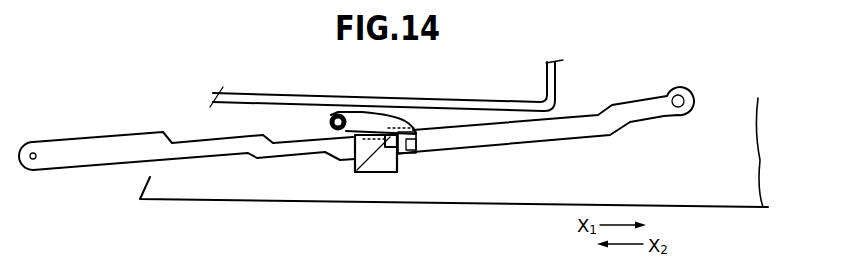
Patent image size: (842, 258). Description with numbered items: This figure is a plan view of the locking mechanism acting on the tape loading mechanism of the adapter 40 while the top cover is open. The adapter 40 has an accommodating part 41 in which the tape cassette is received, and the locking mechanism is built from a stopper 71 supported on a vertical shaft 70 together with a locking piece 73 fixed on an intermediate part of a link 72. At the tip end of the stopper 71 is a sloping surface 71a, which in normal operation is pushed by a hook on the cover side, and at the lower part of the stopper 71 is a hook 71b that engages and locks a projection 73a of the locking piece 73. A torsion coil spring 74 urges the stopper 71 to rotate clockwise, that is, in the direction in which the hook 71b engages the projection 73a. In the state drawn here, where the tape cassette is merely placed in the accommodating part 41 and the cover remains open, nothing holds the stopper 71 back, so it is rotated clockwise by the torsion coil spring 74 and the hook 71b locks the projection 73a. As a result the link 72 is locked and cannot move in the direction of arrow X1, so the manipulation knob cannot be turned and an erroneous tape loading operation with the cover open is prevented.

The adapter 40 is at (747, 147).
The accommodating part 41 is at (551, 82).
The vertical shaft 70 is at (336, 114).
The stopper 71 is at (386, 119).
The sloping surface 71a is at (398, 151).
The hook 71b is at (405, 148).
The link 72 is at (542, 138).
The locking piece 73 is at (376, 165).
The projection 73a is at (357, 164).
The torsion coil spring 74 is at (362, 111).